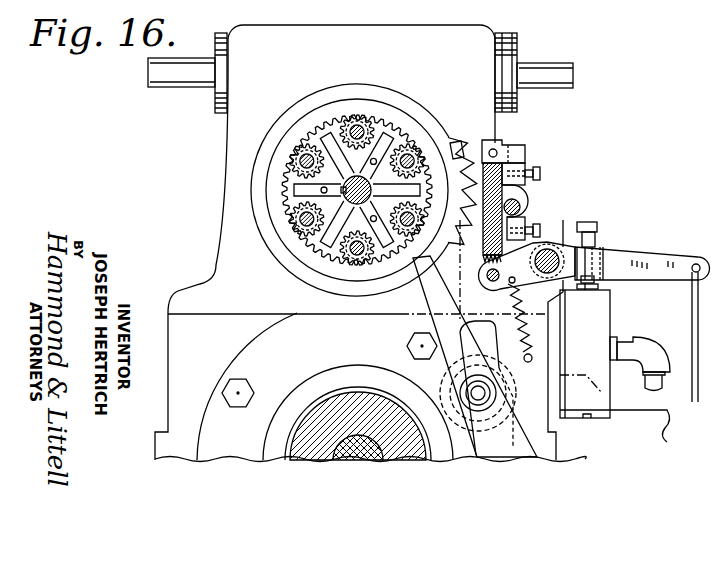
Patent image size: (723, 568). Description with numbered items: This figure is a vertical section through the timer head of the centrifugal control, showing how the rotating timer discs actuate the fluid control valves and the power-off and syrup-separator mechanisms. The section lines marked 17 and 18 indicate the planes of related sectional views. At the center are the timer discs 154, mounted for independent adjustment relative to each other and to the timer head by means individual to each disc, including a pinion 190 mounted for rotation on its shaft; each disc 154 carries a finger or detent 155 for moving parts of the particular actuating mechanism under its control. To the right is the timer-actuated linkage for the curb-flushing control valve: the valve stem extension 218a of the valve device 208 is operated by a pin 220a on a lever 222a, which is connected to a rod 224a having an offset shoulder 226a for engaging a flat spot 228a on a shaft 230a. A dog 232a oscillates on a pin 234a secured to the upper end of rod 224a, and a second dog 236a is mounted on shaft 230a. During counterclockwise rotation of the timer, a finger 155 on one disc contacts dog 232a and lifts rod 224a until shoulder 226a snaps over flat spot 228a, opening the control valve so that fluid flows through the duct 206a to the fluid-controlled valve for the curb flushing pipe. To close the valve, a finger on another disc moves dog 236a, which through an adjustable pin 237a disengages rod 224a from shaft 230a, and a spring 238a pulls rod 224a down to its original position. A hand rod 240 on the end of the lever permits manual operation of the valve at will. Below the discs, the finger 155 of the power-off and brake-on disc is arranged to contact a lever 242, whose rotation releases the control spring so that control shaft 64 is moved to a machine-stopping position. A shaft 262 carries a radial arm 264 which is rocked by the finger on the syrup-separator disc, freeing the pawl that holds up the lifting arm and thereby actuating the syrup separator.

The section line 17- 17 is at (431, 65).
The section line 18- 18 is at (588, 80).
The control shaft 64 is at (345, 447).
The timer disc 154 is at (308, 124).
The finger or detent 155 is at (456, 153).
The pinion 190 is at (309, 214).
The fluid duct 206a is at (641, 381).
The valve device 208 is at (585, 354).
The valve stem extension 218a is at (600, 287).
The pin 220a is at (598, 250).
The lever 222a is at (590, 222).
The rod 224a is at (486, 275).
The offset shoulder 226a is at (478, 240).
The flat spot 228a is at (520, 203).
The shaft 230a is at (472, 245).
The dog 232a is at (520, 143).
The pin 234a is at (502, 145).
The second dog 236a is at (530, 170).
The adjustable pin 237a is at (530, 240).
The spring 238a is at (513, 321).
The hand rod 240 is at (699, 354).
The lever 242 is at (430, 294).
The shaft 262 is at (476, 393).
The radial arm 264 is at (480, 330).